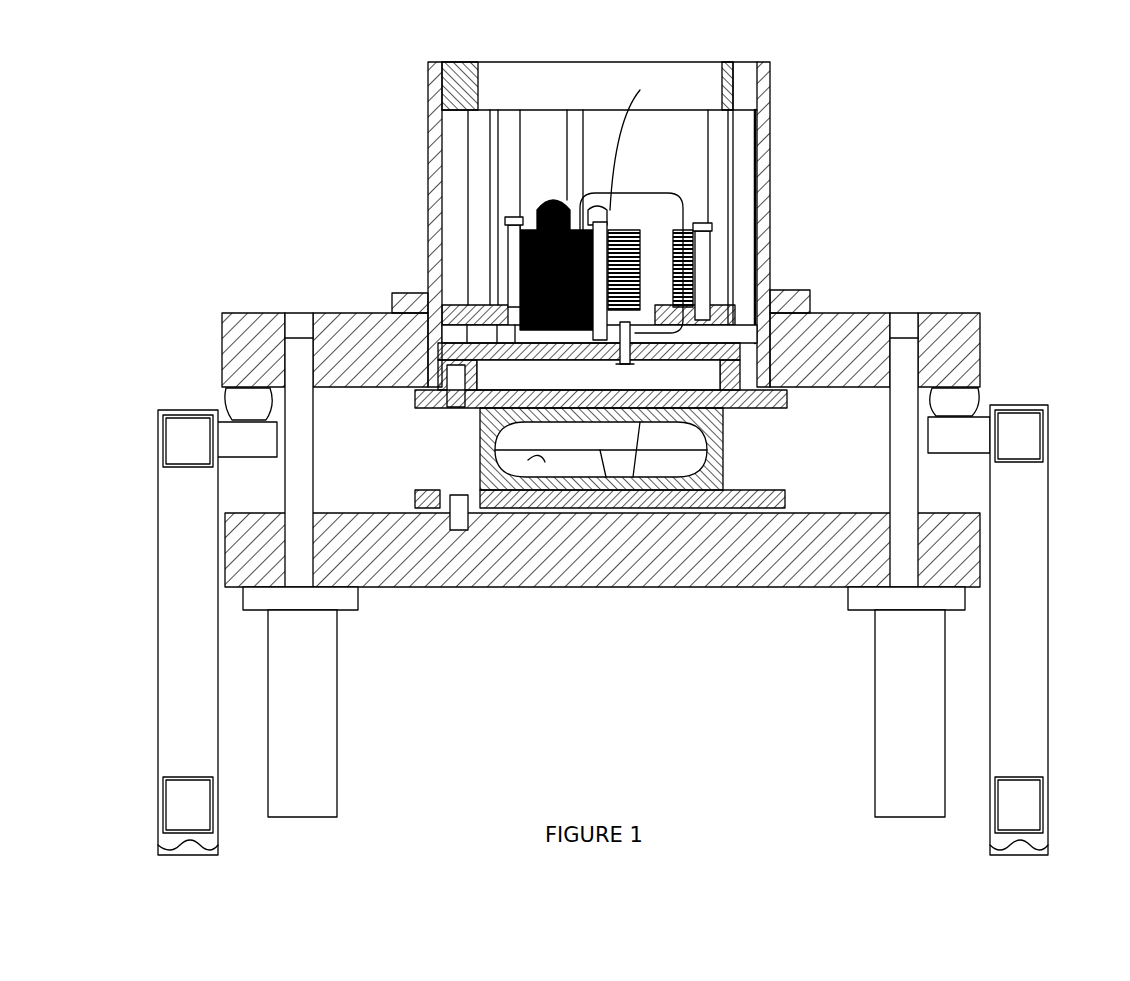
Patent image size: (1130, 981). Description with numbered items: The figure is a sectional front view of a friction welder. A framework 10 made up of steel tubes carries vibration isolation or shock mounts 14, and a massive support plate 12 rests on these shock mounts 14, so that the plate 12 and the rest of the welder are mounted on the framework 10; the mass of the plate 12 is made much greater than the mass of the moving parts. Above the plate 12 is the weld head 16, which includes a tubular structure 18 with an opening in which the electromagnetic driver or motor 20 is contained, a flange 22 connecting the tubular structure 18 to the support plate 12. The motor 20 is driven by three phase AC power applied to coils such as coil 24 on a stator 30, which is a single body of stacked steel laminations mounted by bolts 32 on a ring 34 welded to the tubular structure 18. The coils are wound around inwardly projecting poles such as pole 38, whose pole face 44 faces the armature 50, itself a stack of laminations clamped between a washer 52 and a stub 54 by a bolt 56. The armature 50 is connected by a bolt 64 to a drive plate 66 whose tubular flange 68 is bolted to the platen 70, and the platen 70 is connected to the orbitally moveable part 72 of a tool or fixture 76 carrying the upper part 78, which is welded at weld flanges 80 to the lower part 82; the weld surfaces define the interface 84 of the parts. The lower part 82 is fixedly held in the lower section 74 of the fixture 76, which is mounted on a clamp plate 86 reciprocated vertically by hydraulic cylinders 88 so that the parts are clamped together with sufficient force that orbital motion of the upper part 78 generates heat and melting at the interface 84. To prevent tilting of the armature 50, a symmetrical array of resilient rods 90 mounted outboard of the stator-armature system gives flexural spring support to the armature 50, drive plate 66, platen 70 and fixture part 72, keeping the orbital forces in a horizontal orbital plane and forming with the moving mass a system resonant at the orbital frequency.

The framework 10 is at (1050, 560).
The support plate 12 is at (983, 345).
The shock mounts 14 is at (235, 405).
The weld head 16 is at (830, 252).
The tubular structure 18 is at (770, 128).
The electromagnetic driver or motor 20 is at (708, 158).
The flange 22 is at (812, 300).
The coil 24 is at (700, 197).
The stator 30 is at (713, 252).
The bolts 32 is at (508, 235).
The ring 34 is at (455, 308).
The pole 38 is at (572, 230).
The stator pole face 44 is at (552, 195).
The armature 50 is at (622, 238).
The washer 52 is at (607, 218).
The stub 54 is at (660, 325).
The bolt 56 is at (629, 142).
The bolt 64 is at (638, 362).
The drive plate 66 is at (540, 343).
The tubular flange 68 is at (470, 386).
The platen 70 is at (787, 400).
The orbitally moveable part 72 is at (487, 425).
The lower section 74 is at (725, 480).
The tool or fixture 76 is at (380, 469).
The upper part 78 is at (665, 505).
The weld flanges 80 is at (490, 455).
The lower part 82 is at (575, 512).
The interface 84 is at (606, 462).
The clamp plate 86 is at (765, 590).
The hydraulic cylinders 88 is at (337, 730).
The rods 90 is at (478, 150).